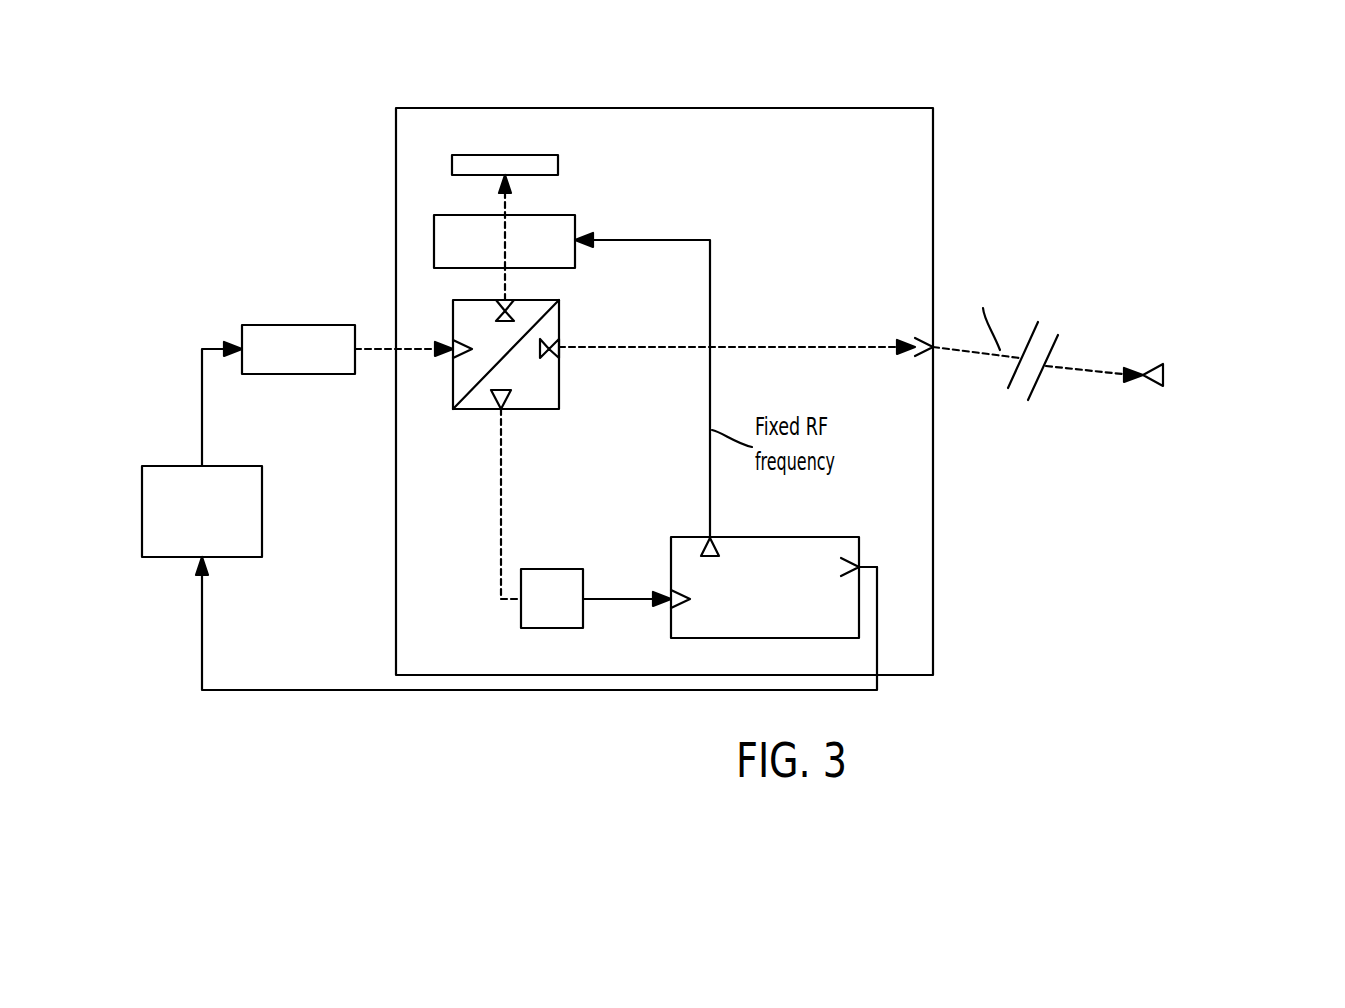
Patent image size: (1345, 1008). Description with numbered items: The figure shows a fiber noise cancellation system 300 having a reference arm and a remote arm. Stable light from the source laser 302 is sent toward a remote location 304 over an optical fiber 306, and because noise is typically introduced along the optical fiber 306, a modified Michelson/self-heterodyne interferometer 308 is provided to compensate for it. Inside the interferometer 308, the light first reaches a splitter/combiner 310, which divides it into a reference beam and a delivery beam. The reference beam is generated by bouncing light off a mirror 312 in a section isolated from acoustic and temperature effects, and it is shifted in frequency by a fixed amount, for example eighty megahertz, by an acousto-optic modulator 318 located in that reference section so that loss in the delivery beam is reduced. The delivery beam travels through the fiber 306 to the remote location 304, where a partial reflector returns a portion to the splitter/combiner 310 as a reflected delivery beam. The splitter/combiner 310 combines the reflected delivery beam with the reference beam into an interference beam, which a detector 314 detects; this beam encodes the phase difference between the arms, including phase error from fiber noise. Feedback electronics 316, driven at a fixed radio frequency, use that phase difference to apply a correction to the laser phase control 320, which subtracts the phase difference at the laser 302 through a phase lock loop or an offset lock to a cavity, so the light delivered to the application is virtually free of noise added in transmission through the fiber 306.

The fiber noise cancellation system 300 is at (1115, 153).
The source laser 302 is at (296, 325).
The remote location 304 is at (1160, 364).
The optical fiber 306 is at (1096, 372).
The modified Michelson/self-heterodyne interferometer 308 is at (835, 108).
The splitter/combiner 310 is at (456, 410).
The mirror 312 is at (470, 155).
The detector 314 is at (550, 569).
The feedback electronics 316 is at (693, 537).
The acousto-optic modulator (AOM) 318 is at (578, 230).
The laser phase control 320 is at (264, 510).